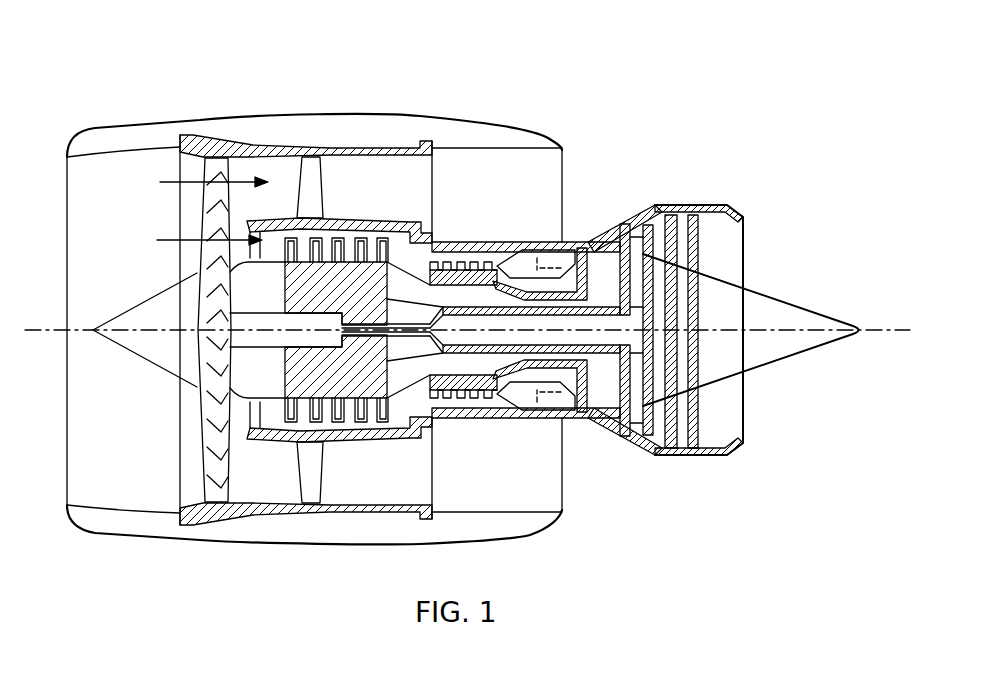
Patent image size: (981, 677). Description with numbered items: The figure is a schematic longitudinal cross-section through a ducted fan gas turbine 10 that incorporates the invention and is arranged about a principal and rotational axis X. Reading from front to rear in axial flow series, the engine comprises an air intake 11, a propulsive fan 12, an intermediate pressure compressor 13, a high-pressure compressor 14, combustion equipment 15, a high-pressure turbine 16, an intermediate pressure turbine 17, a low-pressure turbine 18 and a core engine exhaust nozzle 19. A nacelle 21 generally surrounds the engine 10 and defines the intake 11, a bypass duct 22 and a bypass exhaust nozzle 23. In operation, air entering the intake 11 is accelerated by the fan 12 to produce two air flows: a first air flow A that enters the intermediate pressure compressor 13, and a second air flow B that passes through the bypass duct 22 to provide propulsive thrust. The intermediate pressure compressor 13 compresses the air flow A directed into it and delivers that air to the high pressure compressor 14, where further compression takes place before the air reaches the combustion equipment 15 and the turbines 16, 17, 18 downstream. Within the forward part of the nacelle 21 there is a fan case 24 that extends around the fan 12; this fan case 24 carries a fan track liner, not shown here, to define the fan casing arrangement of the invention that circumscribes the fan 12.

The ducted fan gas turbine 10 is at (119, 60).
The air intake 11 is at (120, 150).
The propulsive fan 12 is at (207, 460).
The intermediate pressure compressor 13 is at (353, 427).
The high-pressure compressor 14 is at (477, 257).
The combustion equipment 15 is at (517, 412).
The high-pressure turbine 16 is at (577, 418).
The intermediate pressure turbine 17 is at (627, 224).
The low-pressure turbine 18 is at (650, 437).
The core engine exhaust nozzle 19 is at (733, 208).
The nacelle 21 is at (297, 130).
The bypass duct 22 is at (536, 185).
The bypass exhaust nozzle 23 is at (562, 140).
The fan case 24 is at (217, 134).
The first air flow A is at (201, 242).
The second air flow B is at (205, 182).
The principal and rotational axis X is at (467, 314).